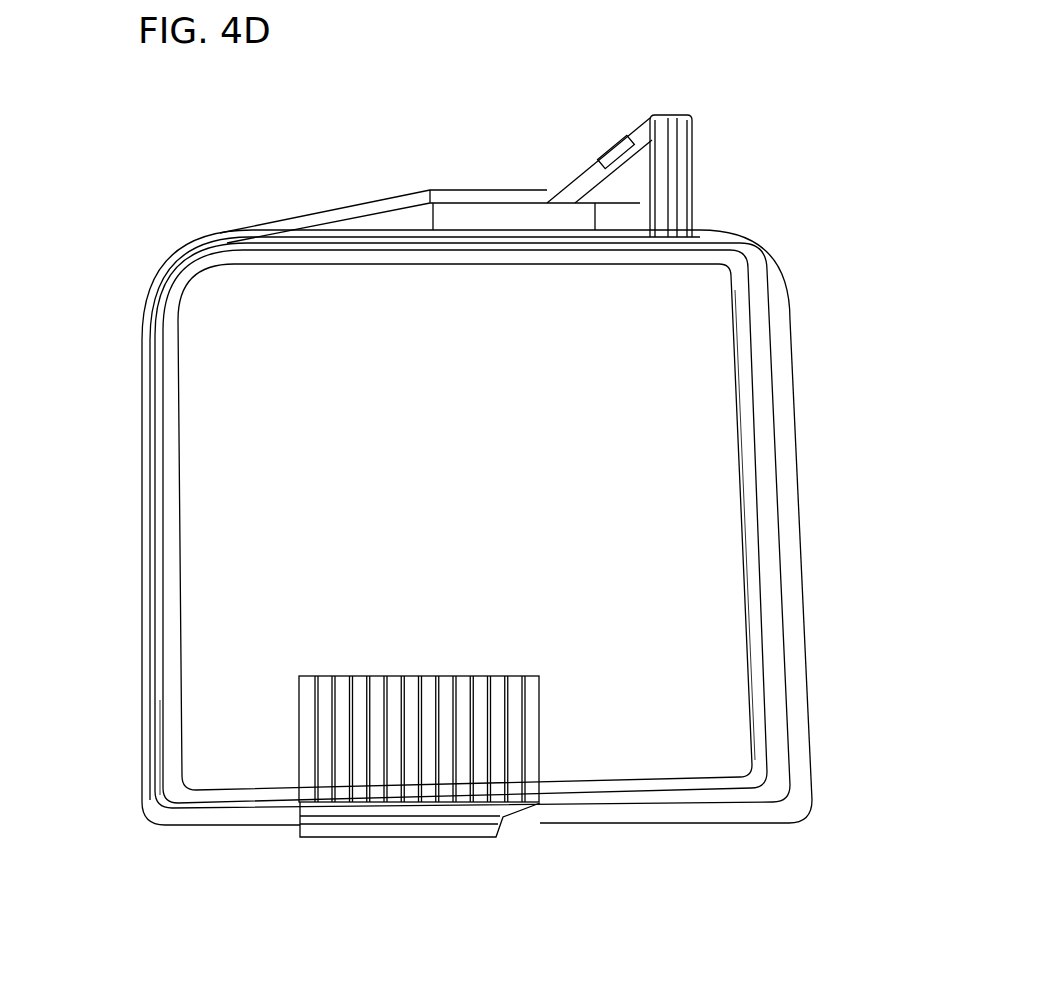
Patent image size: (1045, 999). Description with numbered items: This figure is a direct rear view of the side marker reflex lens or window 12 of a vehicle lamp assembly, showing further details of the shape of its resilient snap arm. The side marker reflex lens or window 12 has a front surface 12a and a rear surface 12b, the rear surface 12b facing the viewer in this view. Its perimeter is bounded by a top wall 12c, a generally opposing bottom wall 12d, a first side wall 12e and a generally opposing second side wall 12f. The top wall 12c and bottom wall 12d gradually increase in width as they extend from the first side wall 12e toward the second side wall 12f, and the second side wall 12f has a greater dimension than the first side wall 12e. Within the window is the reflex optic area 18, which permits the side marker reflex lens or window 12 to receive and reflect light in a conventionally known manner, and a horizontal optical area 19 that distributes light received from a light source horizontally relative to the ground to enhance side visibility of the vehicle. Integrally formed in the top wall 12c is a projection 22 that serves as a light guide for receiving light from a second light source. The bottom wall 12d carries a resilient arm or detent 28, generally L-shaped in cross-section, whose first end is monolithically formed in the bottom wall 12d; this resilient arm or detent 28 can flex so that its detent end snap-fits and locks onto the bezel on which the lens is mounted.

The side marker reflex lens or window 12 is at (228, 293).
The front surface 12a is at (142, 390).
The rear surface 12b is at (695, 586).
The top wall 12c is at (722, 238).
The bottom wall 12d is at (708, 795).
The first side wall 12e is at (175, 705).
The second side wall 12f is at (768, 502).
The reflex optic area 18 is at (469, 399).
The horizontal optical area 19 is at (325, 770).
The projection 22 is at (615, 160).
The resilient arm or detent 28 is at (508, 818).